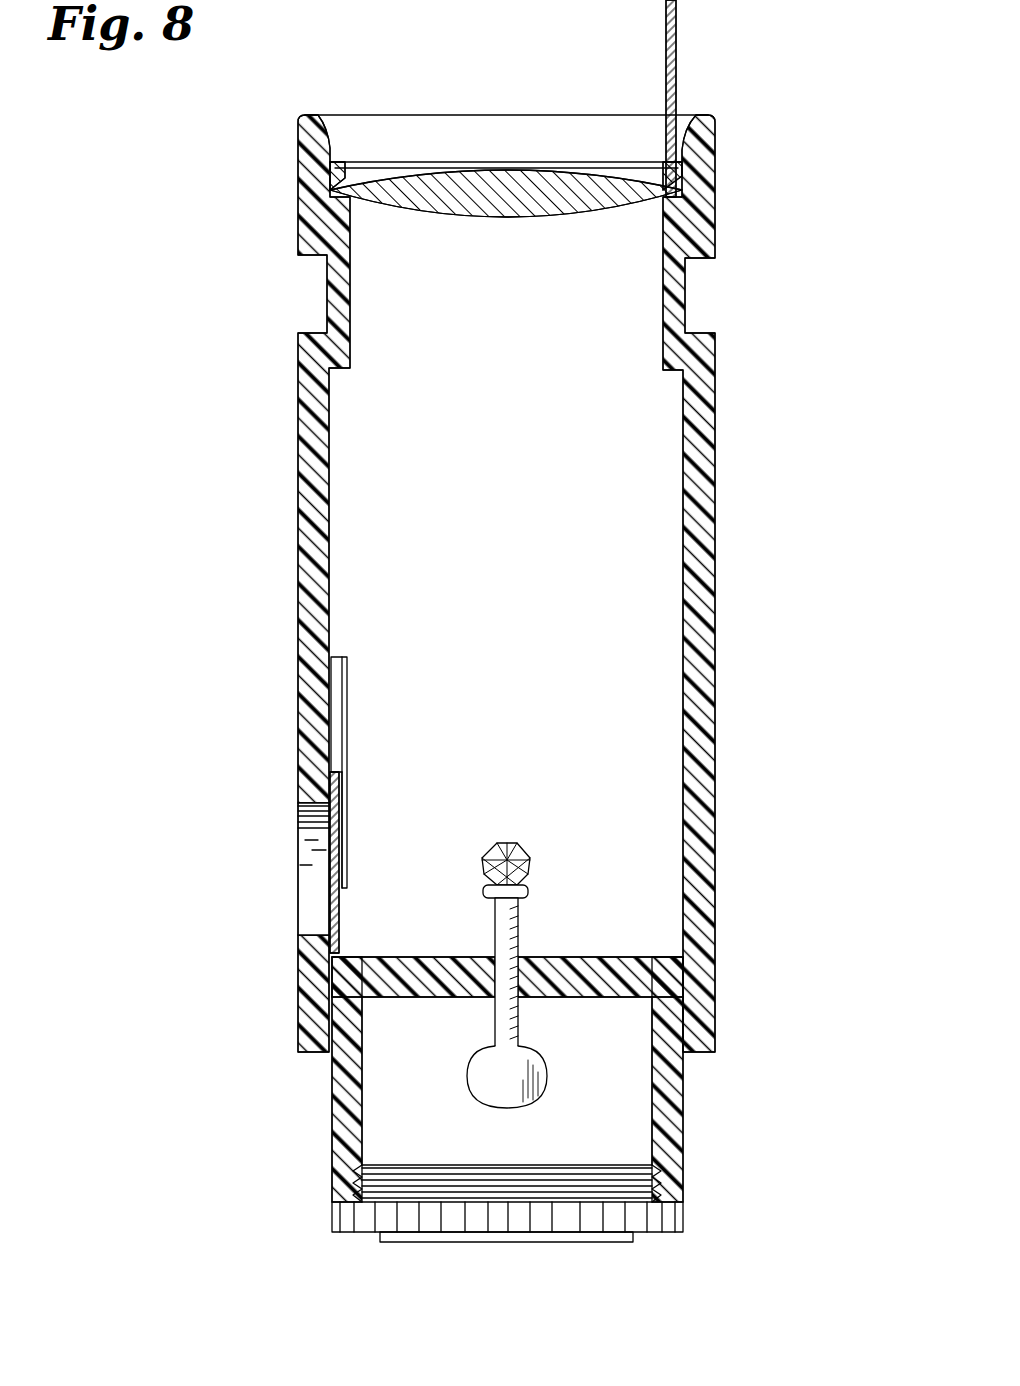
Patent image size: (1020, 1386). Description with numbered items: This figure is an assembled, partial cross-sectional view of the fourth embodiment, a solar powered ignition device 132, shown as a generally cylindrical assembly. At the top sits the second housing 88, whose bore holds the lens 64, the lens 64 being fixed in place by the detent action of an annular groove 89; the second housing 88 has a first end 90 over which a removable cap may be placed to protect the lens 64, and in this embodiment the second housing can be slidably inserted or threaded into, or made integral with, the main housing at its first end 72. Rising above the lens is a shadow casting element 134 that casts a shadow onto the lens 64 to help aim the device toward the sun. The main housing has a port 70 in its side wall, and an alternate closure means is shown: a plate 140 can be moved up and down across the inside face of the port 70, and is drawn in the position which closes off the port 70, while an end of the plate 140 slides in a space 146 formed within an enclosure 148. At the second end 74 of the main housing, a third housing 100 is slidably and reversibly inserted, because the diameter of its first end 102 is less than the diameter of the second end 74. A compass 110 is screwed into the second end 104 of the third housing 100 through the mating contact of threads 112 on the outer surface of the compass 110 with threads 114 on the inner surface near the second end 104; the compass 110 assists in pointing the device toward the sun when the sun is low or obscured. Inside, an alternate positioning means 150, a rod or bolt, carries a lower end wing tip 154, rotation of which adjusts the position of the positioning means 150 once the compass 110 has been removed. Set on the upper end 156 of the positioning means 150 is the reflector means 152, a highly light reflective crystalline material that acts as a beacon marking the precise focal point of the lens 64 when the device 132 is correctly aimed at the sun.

The lens 64 is at (457, 212).
The port 70 is at (308, 897).
The first end of the main housing 72 is at (700, 334).
The second end of the main housing 74 is at (710, 1054).
The second housing 88 is at (715, 186).
The annular groove 89 is at (328, 189).
The first end of the second housing 90 is at (345, 114).
The third housing 100 is at (683, 1118).
The first end of the third housing 102 is at (658, 956).
The second end of the third housing 104 is at (683, 1205).
The compass 110 is at (428, 1216).
The threads on the compass 112 is at (355, 1190).
The threads on the third housing 114 is at (340, 1175).
The solar powered ignition device 132 is at (722, 530).
The shadow casting element 134 is at (677, 16).
The plate 140 is at (338, 918).
The space 146 is at (338, 697).
The enclosure 148 is at (347, 722).
The positioning means 150 is at (518, 926).
The reflector means 152 is at (512, 846).
The lower end wing tip 154 is at (545, 1075).
The upper end of the positioning means 156 is at (528, 891).